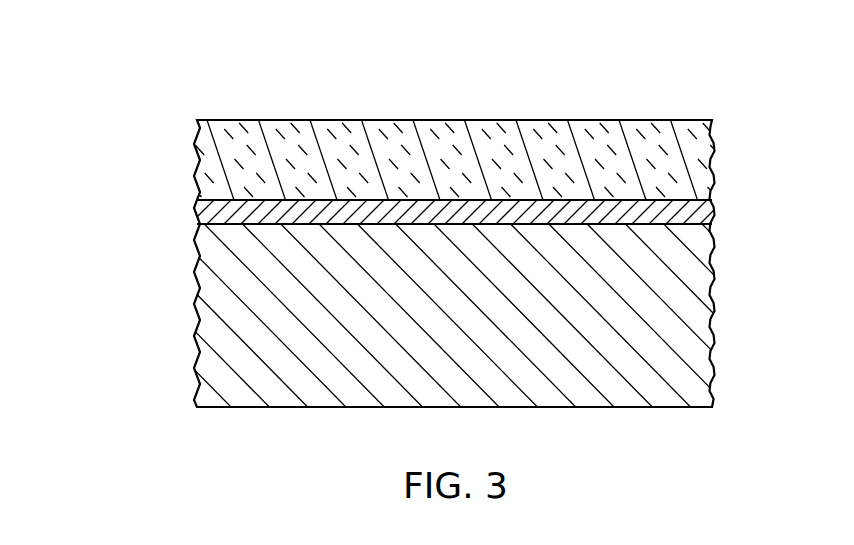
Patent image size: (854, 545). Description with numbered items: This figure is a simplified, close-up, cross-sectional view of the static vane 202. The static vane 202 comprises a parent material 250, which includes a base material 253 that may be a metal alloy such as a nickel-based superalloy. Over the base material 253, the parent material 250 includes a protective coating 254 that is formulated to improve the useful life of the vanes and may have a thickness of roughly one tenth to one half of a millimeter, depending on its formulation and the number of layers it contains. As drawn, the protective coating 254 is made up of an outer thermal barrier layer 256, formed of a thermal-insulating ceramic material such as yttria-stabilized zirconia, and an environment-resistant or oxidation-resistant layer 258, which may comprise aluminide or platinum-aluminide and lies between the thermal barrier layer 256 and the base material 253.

The static vane 202 is at (560, 97).
The parent material 250 is at (106, 120).
The base material 253 is at (704, 298).
The protective coating 254 is at (183, 120).
The thermal barrier layer 256 is at (704, 157).
The oxidation-resistant layer 258 is at (704, 209).